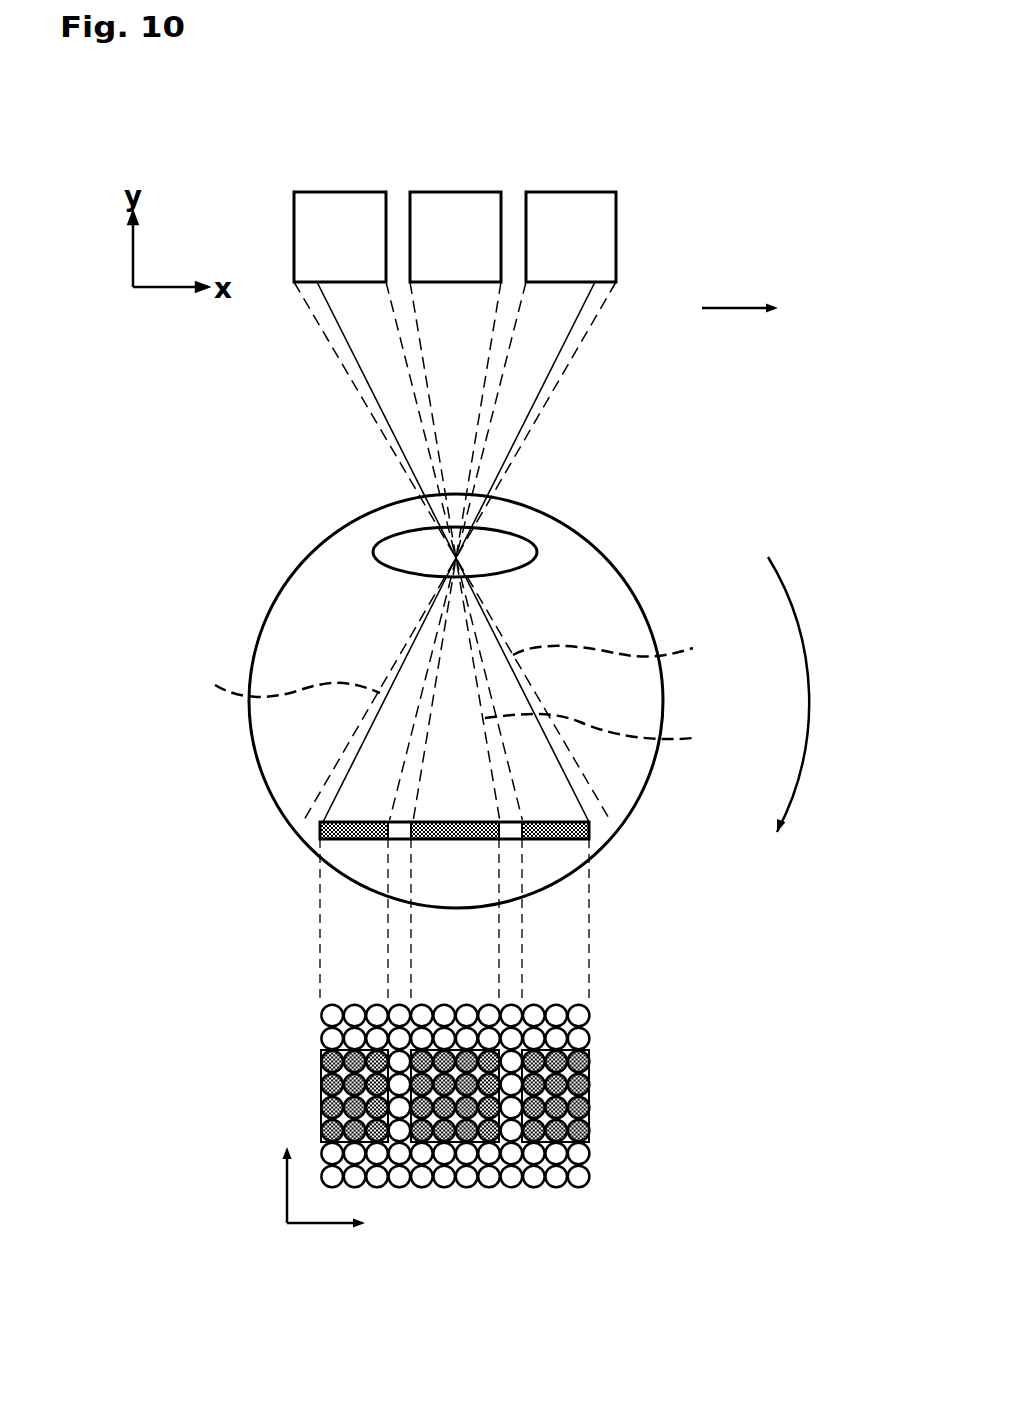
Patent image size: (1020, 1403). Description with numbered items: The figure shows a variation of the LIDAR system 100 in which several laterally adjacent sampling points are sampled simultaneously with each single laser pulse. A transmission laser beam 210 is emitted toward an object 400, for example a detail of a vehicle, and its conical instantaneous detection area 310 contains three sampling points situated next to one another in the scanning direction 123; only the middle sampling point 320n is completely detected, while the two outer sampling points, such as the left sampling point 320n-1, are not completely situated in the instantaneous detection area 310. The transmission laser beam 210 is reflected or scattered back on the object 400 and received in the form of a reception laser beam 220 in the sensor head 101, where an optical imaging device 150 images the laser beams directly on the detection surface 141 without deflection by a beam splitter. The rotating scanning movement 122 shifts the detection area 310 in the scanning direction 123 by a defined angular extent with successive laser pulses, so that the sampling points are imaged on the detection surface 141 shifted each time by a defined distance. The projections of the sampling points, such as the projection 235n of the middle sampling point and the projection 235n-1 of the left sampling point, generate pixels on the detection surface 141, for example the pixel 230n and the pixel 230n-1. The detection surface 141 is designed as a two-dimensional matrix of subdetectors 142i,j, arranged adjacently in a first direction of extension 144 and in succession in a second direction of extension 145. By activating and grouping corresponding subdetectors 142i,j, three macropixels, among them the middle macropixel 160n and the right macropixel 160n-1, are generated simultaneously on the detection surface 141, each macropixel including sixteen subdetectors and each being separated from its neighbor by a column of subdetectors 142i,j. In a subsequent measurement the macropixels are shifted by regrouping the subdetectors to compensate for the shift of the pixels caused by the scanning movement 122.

The left sampling point 320n-1 is at (334, 192).
The middle sampling point 320n is at (452, 192).
The object 400 is at (690, 172).
The transmission laser beam 210 is at (362, 378).
The detection area 310 is at (537, 398).
The scanning direction 123 is at (730, 308).
The LIDAR system 100 is at (185, 572).
The optical imaging device 150 is at (373, 552).
The reception laser beam 220 is at (493, 628).
The sensor head 101 is at (258, 628).
The projection 235n-1 is at (646, 647).
The projection 235n is at (621, 732).
The scanning movement 122 is at (808, 690).
The middle macropixel 160n is at (445, 822).
The right macropixel 160n-1 is at (550, 822).
The detection surface 141 is at (589, 832).
The pixel 230n is at (449, 840).
The pixel 230n-1 is at (560, 840).
The subdetector 142i,j is at (578, 1015).
The second direction of extension 145 is at (286, 1190).
The first direction of extension 144 is at (318, 1224).